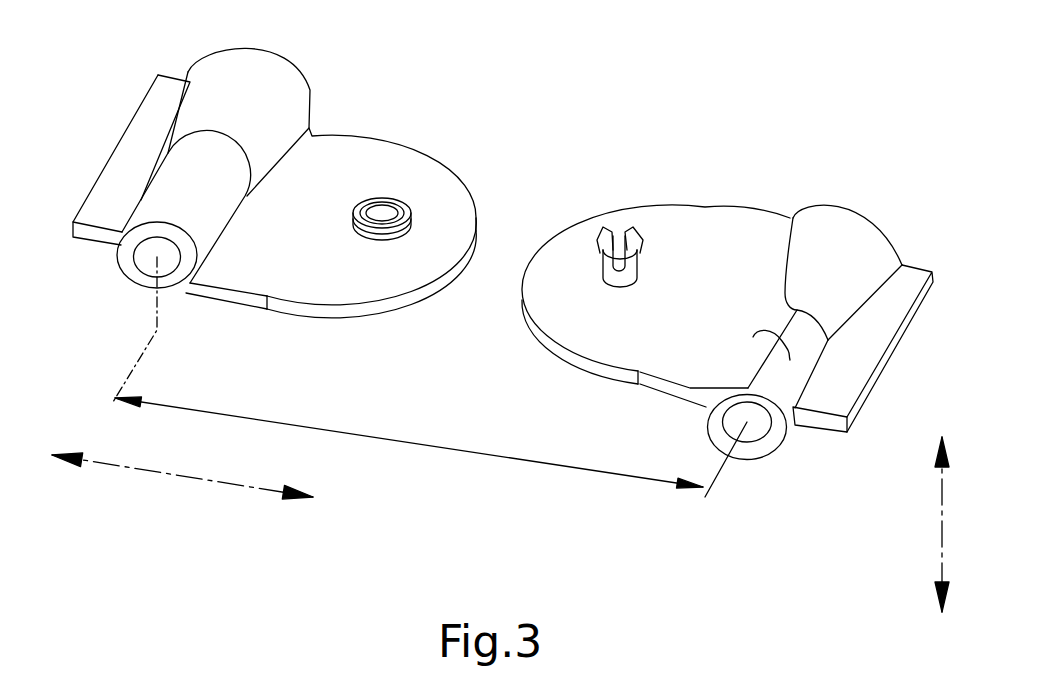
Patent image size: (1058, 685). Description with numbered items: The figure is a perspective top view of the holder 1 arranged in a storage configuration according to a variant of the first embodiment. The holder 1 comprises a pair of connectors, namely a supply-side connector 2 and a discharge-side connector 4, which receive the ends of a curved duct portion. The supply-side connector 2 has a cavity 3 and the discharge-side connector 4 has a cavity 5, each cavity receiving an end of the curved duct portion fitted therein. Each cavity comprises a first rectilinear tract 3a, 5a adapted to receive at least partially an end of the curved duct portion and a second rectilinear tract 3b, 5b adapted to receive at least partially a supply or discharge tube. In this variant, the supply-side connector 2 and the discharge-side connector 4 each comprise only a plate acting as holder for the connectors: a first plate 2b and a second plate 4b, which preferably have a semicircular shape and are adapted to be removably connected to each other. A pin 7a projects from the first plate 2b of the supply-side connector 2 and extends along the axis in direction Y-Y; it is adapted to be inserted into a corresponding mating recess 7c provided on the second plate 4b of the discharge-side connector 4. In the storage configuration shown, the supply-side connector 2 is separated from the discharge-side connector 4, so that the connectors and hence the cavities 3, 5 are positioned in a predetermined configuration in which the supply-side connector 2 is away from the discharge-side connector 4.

The holder 1 is at (850, 57).
The supply-side connector 2 is at (770, 192).
The first plate 2b is at (733, 305).
The cavity 3 is at (767, 470).
The first rectilinear tract 3a is at (753, 337).
The second rectilinear tract 3b is at (847, 260).
The discharge-side connector 4 is at (112, 106).
The second plate 4b is at (303, 248).
The cavity 5 is at (123, 287).
The first rectilinear tract 5a is at (193, 212).
The second rectilinear tract 5b is at (246, 105).
The pin 7a is at (637, 233).
The mating recess 7c is at (385, 198).